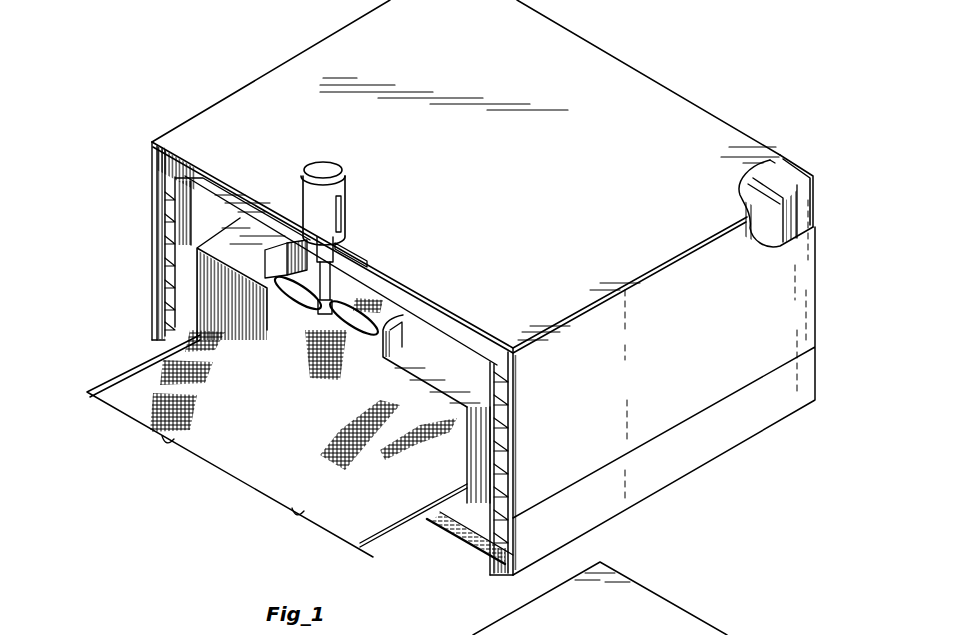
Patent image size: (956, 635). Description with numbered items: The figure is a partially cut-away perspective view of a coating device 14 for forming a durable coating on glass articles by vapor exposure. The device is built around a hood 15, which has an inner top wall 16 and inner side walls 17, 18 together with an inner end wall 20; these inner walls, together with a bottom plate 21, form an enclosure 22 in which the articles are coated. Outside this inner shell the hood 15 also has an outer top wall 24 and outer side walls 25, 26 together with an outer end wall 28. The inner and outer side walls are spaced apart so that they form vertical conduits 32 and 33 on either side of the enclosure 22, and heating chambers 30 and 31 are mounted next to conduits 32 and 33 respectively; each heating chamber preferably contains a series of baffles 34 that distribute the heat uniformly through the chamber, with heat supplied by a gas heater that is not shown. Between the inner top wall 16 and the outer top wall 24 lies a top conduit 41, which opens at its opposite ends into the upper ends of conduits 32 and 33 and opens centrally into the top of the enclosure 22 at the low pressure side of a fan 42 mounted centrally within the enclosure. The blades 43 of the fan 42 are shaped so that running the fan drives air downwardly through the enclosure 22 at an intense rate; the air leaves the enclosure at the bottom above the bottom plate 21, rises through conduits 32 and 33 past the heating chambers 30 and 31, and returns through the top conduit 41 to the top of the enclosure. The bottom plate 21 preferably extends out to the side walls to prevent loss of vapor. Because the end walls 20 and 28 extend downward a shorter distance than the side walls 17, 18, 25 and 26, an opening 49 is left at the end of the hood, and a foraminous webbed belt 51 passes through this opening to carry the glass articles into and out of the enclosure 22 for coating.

The coating device 14 is at (258, 62).
The hood 15 is at (700, 392).
The inner top wall 16 is at (420, 352).
The inner side wall 17 is at (185, 250).
The inner side wall 18 is at (495, 427).
The inner end wall 20 is at (768, 186).
The bottom plate 21 is at (453, 537).
The enclosure 22 is at (220, 302).
The outer top wall 24 is at (386, 294).
The outer side wall 25 is at (170, 222).
The outer side wall 26 is at (505, 402).
The outer end wall 28 is at (797, 185).
The heating chamber 30 is at (168, 287).
The heating chamber 31 is at (505, 485).
The conduit 32 is at (185, 270).
The conduit 33 is at (480, 440).
The baffles 34 is at (165, 196).
The conduit 41 is at (452, 333).
The fan 42 is at (352, 181).
The blades 43 is at (296, 255).
The egress opening 49 is at (810, 226).
The webbed belt 51 is at (280, 467).